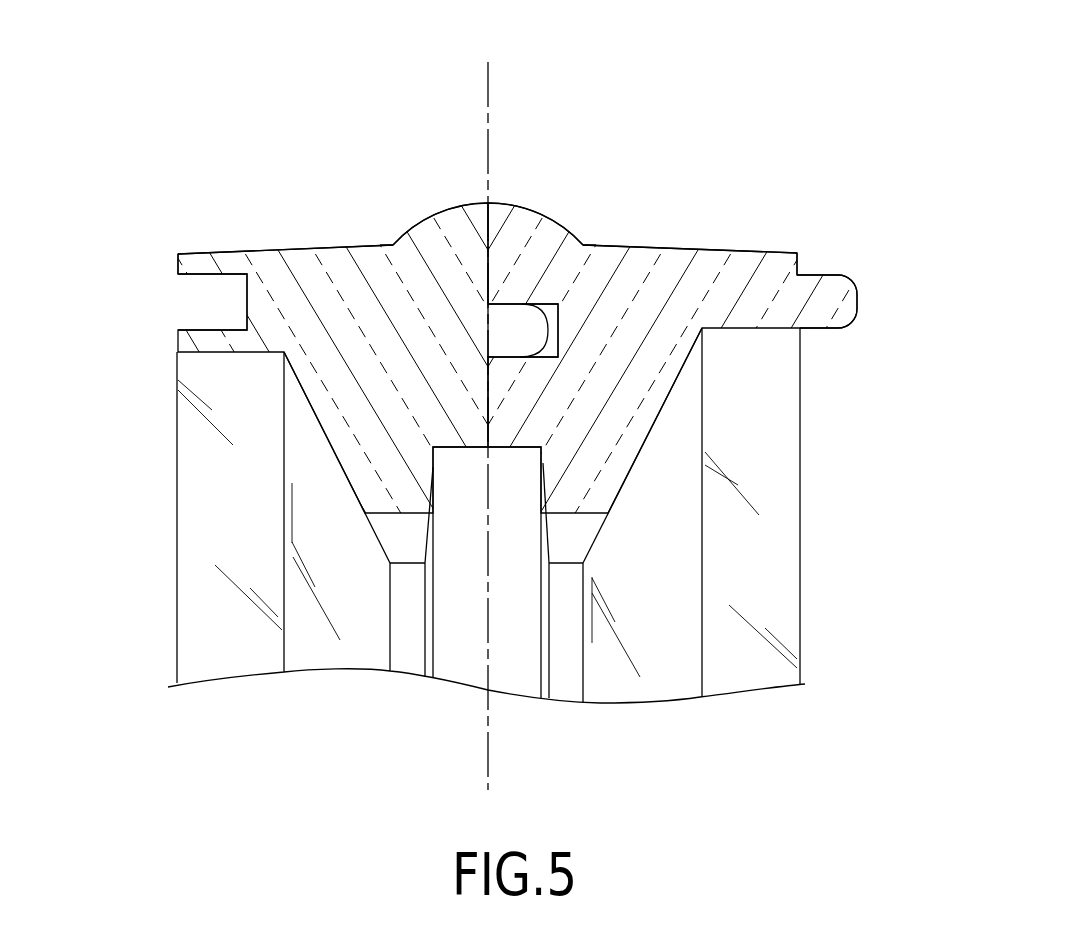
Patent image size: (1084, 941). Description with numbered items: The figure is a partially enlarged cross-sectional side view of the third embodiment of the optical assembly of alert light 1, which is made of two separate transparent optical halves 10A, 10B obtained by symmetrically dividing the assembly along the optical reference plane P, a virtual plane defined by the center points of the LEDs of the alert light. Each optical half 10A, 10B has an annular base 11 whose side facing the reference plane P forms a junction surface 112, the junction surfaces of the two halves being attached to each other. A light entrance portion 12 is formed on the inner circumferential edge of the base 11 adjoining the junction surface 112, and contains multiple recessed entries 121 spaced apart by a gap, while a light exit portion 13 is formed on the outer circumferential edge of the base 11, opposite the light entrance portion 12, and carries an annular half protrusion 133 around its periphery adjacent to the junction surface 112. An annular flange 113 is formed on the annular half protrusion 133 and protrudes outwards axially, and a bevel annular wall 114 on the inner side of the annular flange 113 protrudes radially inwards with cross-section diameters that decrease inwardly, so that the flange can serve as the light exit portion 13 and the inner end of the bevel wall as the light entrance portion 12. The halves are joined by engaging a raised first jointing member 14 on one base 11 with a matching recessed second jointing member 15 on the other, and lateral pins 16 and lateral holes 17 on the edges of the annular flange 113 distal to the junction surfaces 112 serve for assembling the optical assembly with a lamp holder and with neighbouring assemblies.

The optical assembly of alert light 1 is at (693, 107).
The optical reference plane P is at (488, 80).
The optical half 10A is at (748, 228).
The optical half 10B is at (338, 227).
The base 11 is at (318, 243).
The junction surface 112 is at (488, 230).
The annular flange 113 is at (290, 277).
The bevel annular wall 114 is at (373, 385).
The light entrance portion 12 is at (565, 573).
The recessed entry 121 is at (410, 545).
The light exit portion 13 is at (391, 245).
The annular half protrusion 133 is at (435, 215).
The first jointing member 14 is at (523, 333).
The second jointing member 15 is at (548, 333).
The lateral pin 16 is at (827, 307).
The lateral hole 17 is at (215, 275).